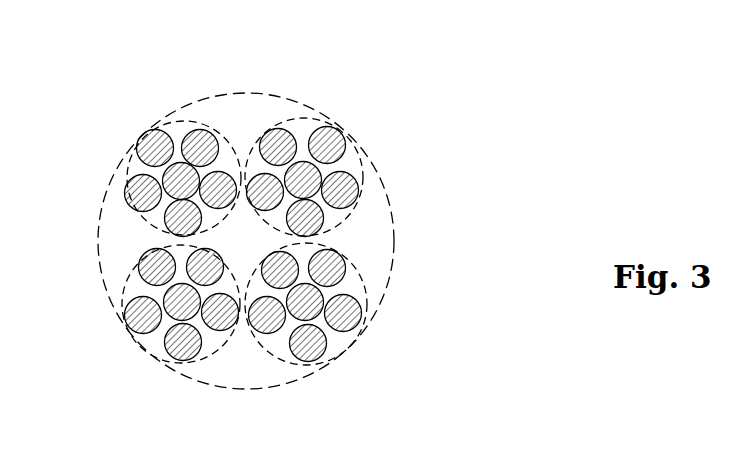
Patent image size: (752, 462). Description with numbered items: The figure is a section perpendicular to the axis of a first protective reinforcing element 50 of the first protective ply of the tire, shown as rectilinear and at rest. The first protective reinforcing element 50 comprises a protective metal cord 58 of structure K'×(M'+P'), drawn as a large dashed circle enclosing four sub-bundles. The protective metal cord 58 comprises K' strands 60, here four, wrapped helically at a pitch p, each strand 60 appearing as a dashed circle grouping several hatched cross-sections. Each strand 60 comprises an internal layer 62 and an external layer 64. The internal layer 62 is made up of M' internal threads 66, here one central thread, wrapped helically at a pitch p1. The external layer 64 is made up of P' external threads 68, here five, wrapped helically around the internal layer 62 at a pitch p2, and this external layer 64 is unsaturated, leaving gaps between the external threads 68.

The first protective reinforcing element 50 is at (401, 193).
The protective metal cord 58 is at (316, 106).
The strand 60 is at (128, 208).
The internal layer 62 is at (289, 328).
The external layer 64 is at (364, 300).
The internal thread 66 is at (178, 303).
The external thread 68 is at (183, 345).